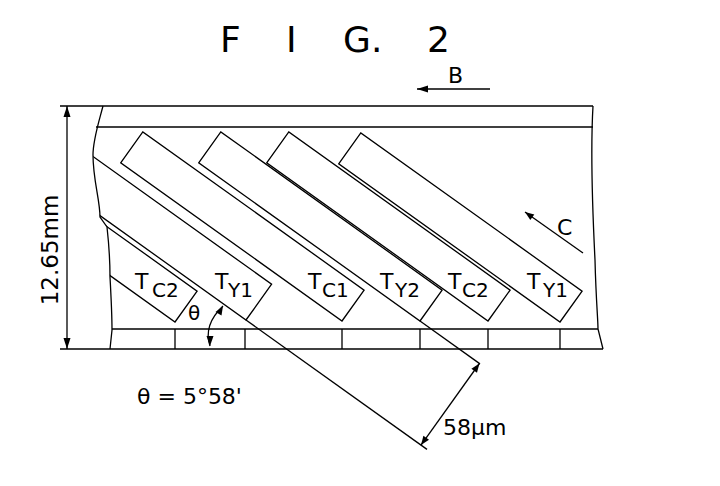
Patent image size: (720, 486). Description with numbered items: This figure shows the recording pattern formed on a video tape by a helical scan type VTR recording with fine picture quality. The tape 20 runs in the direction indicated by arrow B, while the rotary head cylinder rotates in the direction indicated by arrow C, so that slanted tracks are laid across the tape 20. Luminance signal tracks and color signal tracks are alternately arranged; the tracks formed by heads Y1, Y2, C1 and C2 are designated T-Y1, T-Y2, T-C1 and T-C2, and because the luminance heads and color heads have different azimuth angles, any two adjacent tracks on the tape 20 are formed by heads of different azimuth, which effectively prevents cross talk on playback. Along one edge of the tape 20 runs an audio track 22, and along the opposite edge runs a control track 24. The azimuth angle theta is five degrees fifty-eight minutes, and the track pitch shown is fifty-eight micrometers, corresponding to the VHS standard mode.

The tape 20 is at (194, 106).
The audio track 22 is at (582, 120).
The control track 24 is at (582, 338).